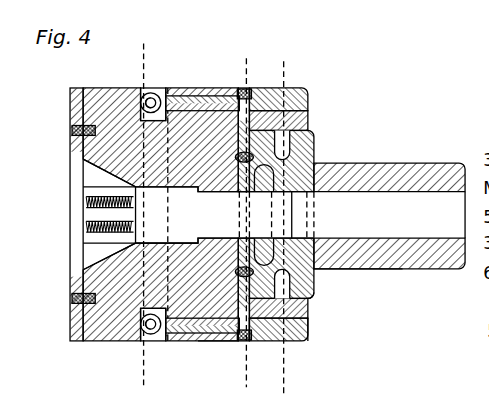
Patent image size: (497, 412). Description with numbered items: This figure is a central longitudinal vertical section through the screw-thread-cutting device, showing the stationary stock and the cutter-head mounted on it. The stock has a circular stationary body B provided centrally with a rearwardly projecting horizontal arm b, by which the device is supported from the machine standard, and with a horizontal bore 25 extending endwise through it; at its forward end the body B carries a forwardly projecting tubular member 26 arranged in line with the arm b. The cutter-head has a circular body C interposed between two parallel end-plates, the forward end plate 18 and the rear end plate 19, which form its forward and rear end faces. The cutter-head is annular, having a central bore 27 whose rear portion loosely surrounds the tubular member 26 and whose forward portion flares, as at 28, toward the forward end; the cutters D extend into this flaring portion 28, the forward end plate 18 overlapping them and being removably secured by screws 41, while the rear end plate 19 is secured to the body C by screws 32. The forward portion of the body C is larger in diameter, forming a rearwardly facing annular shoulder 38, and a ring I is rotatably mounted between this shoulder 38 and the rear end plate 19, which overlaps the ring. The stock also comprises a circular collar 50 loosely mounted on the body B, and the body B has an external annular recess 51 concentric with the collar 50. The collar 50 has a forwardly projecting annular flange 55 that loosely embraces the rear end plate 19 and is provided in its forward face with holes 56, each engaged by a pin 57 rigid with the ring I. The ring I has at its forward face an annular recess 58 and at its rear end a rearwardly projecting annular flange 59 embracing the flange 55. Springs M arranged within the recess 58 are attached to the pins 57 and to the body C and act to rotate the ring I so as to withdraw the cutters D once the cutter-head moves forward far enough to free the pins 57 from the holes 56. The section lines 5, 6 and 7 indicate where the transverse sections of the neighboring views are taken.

The body of the cutter-head C is at (115, 85).
The forward end plate 18 is at (70, 103).
The screws 41 is at (72, 128).
The flaring forward end-portion of the bore 28 is at (107, 166).
The cutters D is at (83, 196).
The tubular member 26 is at (197, 213).
The screws 32 is at (271, 215).
The pins 57 is at (209, 93).
The springs M is at (160, 89).
The annular recess 58 is at (158, 92).
The annular shoulder 38 is at (141, 334).
The annular flange 55 is at (247, 88).
The holes 56 is at (306, 100).
The rear end plate 19 is at (307, 117).
The body of the stock B is at (313, 143).
The arm b is at (440, 162).
The bore 25 is at (396, 268).
The external annular recess 51 is at (312, 293).
The collar 50 is at (306, 335).
The annular flange of the ring 59 is at (249, 341).
The central bore of the cutter-head 27 is at (147, 243).
The ring I is at (212, 341).
The section line 5— 5 is at (154, 54).
The section line 6— 6 is at (256, 66).
The section line 7— 7 is at (294, 70).